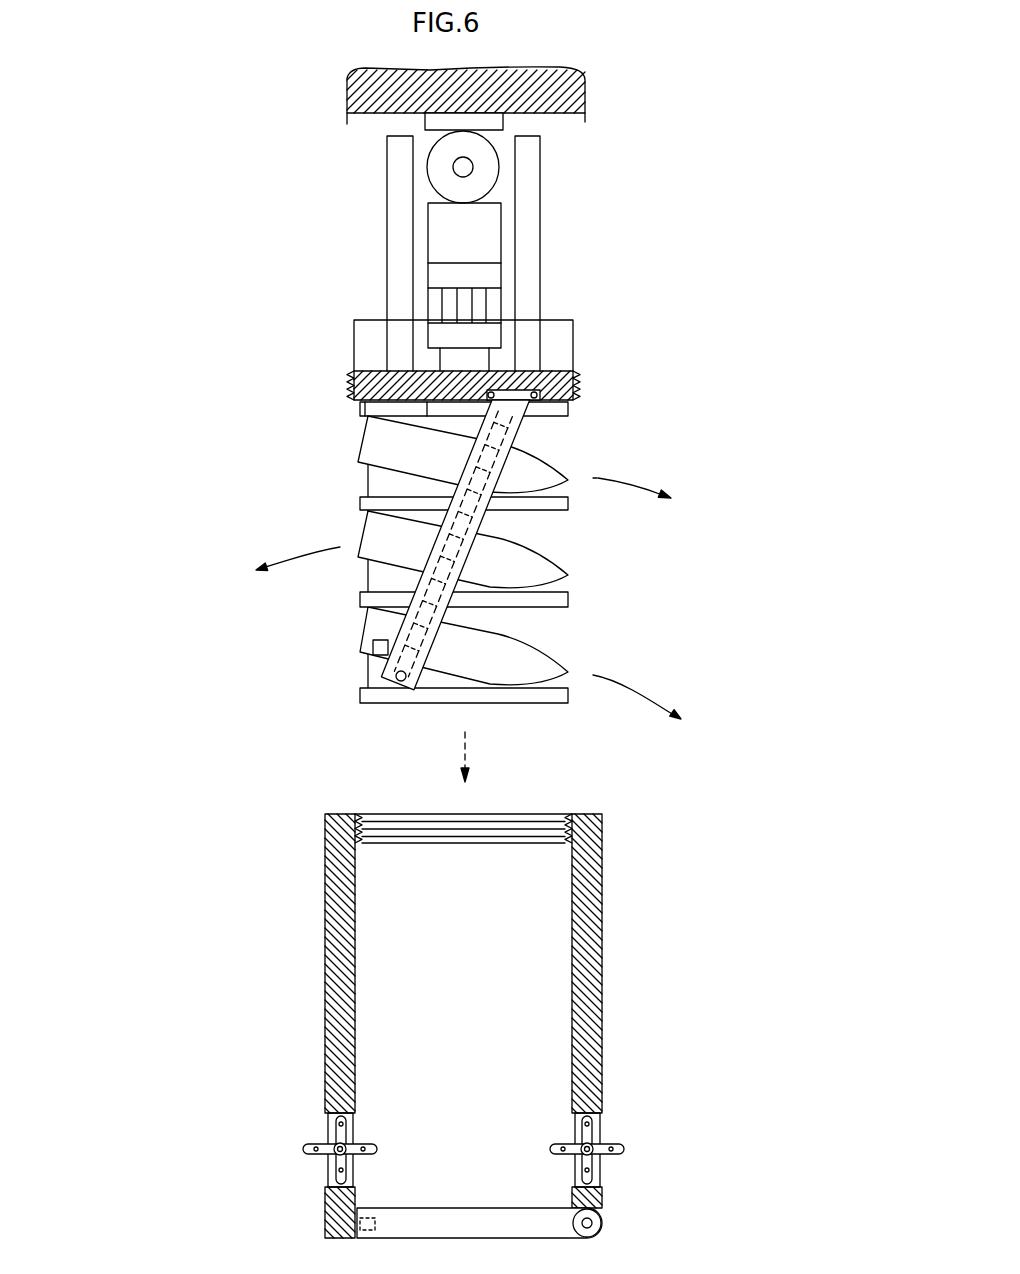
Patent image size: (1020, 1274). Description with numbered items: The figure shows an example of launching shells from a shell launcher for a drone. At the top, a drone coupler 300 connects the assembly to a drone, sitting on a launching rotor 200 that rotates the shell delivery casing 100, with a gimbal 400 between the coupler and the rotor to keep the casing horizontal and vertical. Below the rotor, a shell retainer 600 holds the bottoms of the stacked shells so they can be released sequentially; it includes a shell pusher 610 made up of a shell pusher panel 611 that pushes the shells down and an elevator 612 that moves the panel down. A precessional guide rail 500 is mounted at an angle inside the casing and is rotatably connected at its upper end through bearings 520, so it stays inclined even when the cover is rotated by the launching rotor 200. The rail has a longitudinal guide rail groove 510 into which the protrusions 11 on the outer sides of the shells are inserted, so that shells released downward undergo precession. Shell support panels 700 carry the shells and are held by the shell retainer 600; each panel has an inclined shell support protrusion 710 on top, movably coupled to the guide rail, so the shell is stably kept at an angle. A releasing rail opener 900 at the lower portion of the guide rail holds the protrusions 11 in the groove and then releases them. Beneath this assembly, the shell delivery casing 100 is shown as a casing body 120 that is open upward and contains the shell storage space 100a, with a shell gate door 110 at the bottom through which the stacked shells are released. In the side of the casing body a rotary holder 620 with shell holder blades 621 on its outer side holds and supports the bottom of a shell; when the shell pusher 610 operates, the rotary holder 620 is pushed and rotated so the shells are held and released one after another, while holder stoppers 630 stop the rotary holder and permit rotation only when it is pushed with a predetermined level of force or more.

The protrusions 11 is at (505, 470).
The shell delivery casing 100 is at (486, 1026).
The shell storage space 100a is at (525, 887).
The shell gate door 110 is at (508, 1225).
The casing body 120 is at (345, 1000).
The launching rotor 200 is at (453, 238).
The drone coupler 300 is at (483, 122).
The gimbal 400 is at (483, 185).
The precessional guide rail 500 is at (452, 545).
The guide rail groove 510 is at (402, 682).
The bearings 520 is at (550, 372).
The shell retainer 600 is at (373, 689).
The shell pusher 610 is at (348, 276).
The shell pusher panel 611 is at (393, 410).
The elevator 612 is at (398, 288).
The rotary holder 620 is at (330, 1150).
The shell holder blades 621 is at (340, 1130).
The holder stoppers 630 is at (412, 1212).
The shell support panels 700 is at (387, 510).
The shell support protrusion 710 is at (387, 478).
The releasing rail openers 900 is at (372, 660).